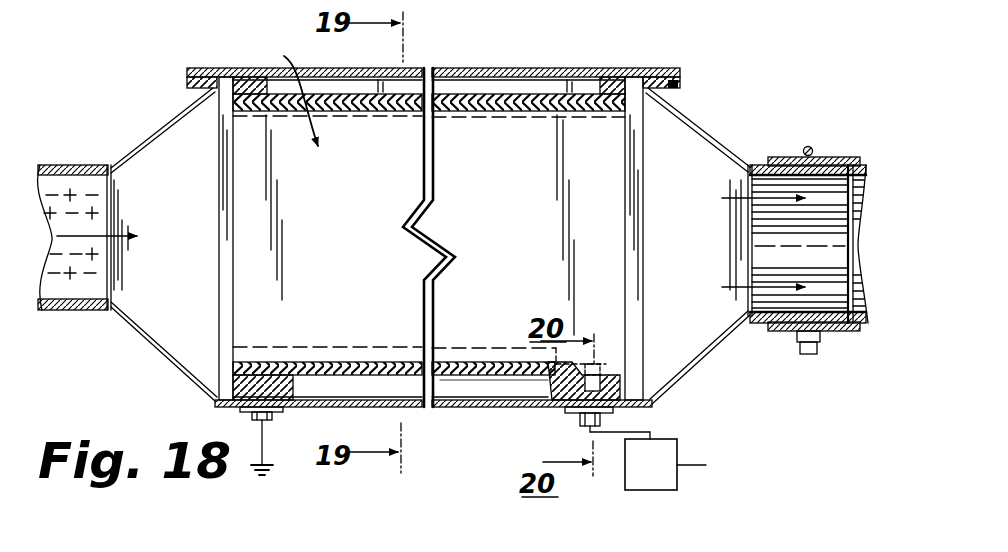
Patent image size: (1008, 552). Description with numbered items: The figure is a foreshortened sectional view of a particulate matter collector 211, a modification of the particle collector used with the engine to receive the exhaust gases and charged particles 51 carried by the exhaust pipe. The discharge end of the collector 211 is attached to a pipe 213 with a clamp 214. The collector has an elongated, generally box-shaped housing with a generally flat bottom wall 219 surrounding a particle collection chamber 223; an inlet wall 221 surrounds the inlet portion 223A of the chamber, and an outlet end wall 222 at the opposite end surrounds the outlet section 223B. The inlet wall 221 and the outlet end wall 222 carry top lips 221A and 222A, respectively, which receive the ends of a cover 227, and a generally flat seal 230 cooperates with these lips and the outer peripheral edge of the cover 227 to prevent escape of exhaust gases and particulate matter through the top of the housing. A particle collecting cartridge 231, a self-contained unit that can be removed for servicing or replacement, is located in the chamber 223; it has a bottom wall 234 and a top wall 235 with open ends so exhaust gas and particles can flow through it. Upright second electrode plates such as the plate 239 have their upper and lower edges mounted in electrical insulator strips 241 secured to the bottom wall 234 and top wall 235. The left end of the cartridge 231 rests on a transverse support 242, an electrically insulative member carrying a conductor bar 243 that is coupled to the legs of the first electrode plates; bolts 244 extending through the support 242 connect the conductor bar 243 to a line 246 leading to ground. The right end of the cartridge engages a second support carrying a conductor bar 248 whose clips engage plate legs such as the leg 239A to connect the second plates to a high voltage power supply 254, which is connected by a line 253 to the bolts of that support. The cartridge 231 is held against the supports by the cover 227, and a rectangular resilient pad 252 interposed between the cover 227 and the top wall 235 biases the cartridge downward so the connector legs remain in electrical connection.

The particulate matter collector 211 is at (760, 84).
The pipe 213 is at (853, 165).
The clamp 214 is at (806, 147).
The bottom wall 219 is at (546, 404).
The inlet wall 221 is at (156, 134).
The top lip 221A is at (190, 88).
The outlet end wall 222 is at (722, 350).
The top lip 222A is at (682, 92).
The particle collection chamber 223 is at (219, 336).
The inlet portion 223A is at (198, 248).
The outlet section 223B is at (738, 248).
The cover 227 is at (514, 68).
The seal 230 is at (678, 80).
The particle collecting cartridge 231 is at (287, 92).
The bottom wall 234 is at (492, 380).
The top wall 235 is at (522, 100).
The second electrode 239 is at (552, 232).
The plate leg 239A is at (602, 384).
The electrical insulator strips 241 is at (530, 112).
The transverse support 242 is at (296, 381).
The conductor bar 243 is at (216, 402).
The bolts 244 is at (274, 418).
The line 246 is at (260, 441).
The conductor bar 248 is at (646, 404).
The resilient pad 252 is at (610, 84).
The line 253 is at (656, 430).
The high voltage power supply 254 is at (660, 490).
The charged particles 51 is at (84, 274).